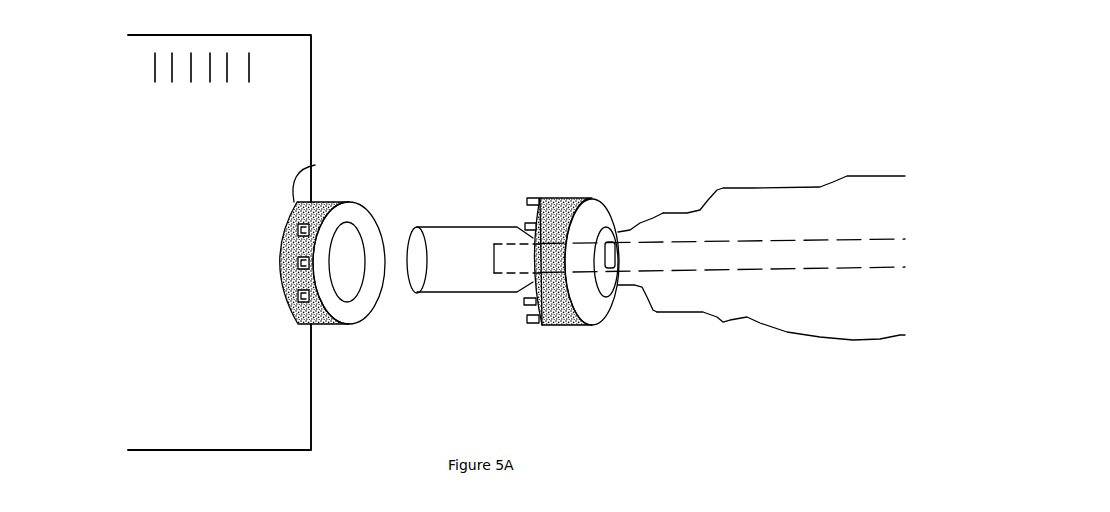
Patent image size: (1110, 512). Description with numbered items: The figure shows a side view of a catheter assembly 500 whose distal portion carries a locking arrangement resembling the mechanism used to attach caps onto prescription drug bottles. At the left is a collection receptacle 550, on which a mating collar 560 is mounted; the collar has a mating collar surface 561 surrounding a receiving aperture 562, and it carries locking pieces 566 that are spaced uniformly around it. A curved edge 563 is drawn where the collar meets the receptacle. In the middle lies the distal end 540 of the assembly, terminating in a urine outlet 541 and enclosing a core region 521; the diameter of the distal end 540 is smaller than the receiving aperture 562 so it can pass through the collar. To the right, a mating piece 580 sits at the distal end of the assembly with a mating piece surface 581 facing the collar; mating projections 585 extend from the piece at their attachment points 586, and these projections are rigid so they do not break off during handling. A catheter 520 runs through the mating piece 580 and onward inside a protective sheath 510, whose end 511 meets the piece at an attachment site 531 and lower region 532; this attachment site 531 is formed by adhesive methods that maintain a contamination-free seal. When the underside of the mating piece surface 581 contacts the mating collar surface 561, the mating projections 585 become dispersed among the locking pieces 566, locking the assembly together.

The catheter assembly 500 is at (82, 209).
The collection receptacle 550 is at (291, 118).
The wall opening edge 563 is at (319, 177).
The mating collar 560 is at (312, 322).
The locking pieces 566 is at (302, 225).
The mating collar surface 561 is at (355, 310).
The receiving aperture 562 is at (343, 252).
The distal end 540 is at (450, 247).
The urine outlet 541 is at (420, 265).
The plug core end 521 is at (503, 258).
The catheter 520 is at (773, 257).
The mating piece 580 is at (553, 312).
The mating projections 585 is at (530, 198).
The attachment points 586 is at (539, 197).
The mating piece surface 581 is at (587, 218).
The attachment site 531 is at (602, 237).
The aperture lower portion 532 is at (605, 287).
The cable end 511 is at (628, 233).
The protective sheath 510 is at (752, 187).